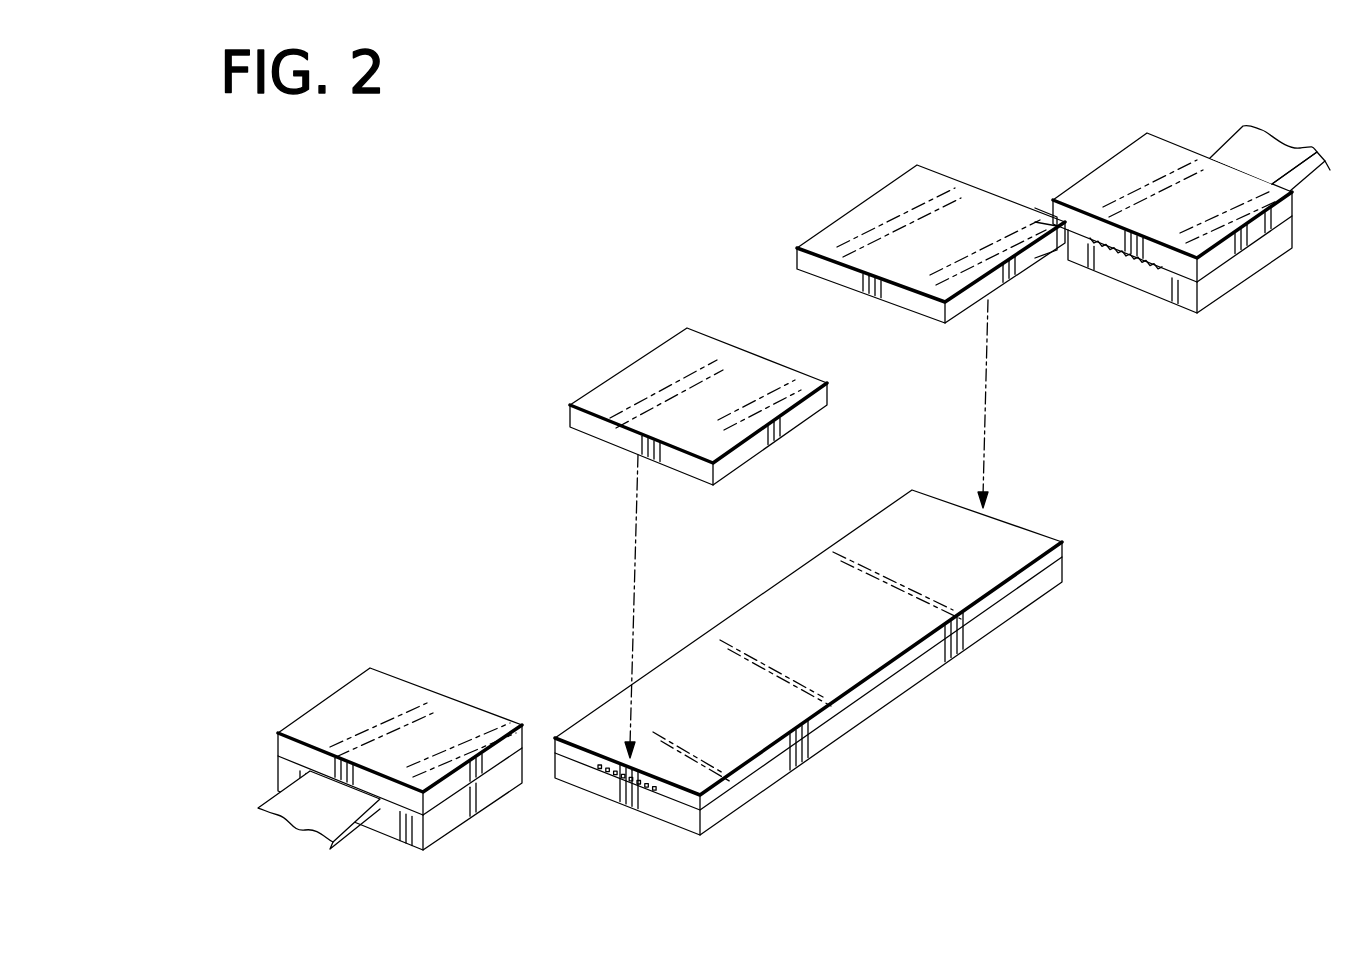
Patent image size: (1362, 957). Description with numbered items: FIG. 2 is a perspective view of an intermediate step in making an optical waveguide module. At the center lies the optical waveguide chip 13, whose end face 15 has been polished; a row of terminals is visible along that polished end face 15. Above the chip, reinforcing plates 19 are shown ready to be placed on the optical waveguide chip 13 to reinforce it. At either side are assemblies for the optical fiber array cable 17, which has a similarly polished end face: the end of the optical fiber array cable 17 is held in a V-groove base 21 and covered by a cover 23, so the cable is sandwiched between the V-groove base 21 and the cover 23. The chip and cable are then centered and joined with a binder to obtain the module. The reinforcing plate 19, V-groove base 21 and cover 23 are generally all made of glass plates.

The optical waveguide chip 13 is at (940, 588).
The end face 15 is at (657, 792).
The optical fiber array cable 17 is at (1248, 157).
The reinforcing plate 19 is at (655, 372).
The V-groove base 21 is at (1213, 282).
The cover 23 is at (1215, 205).